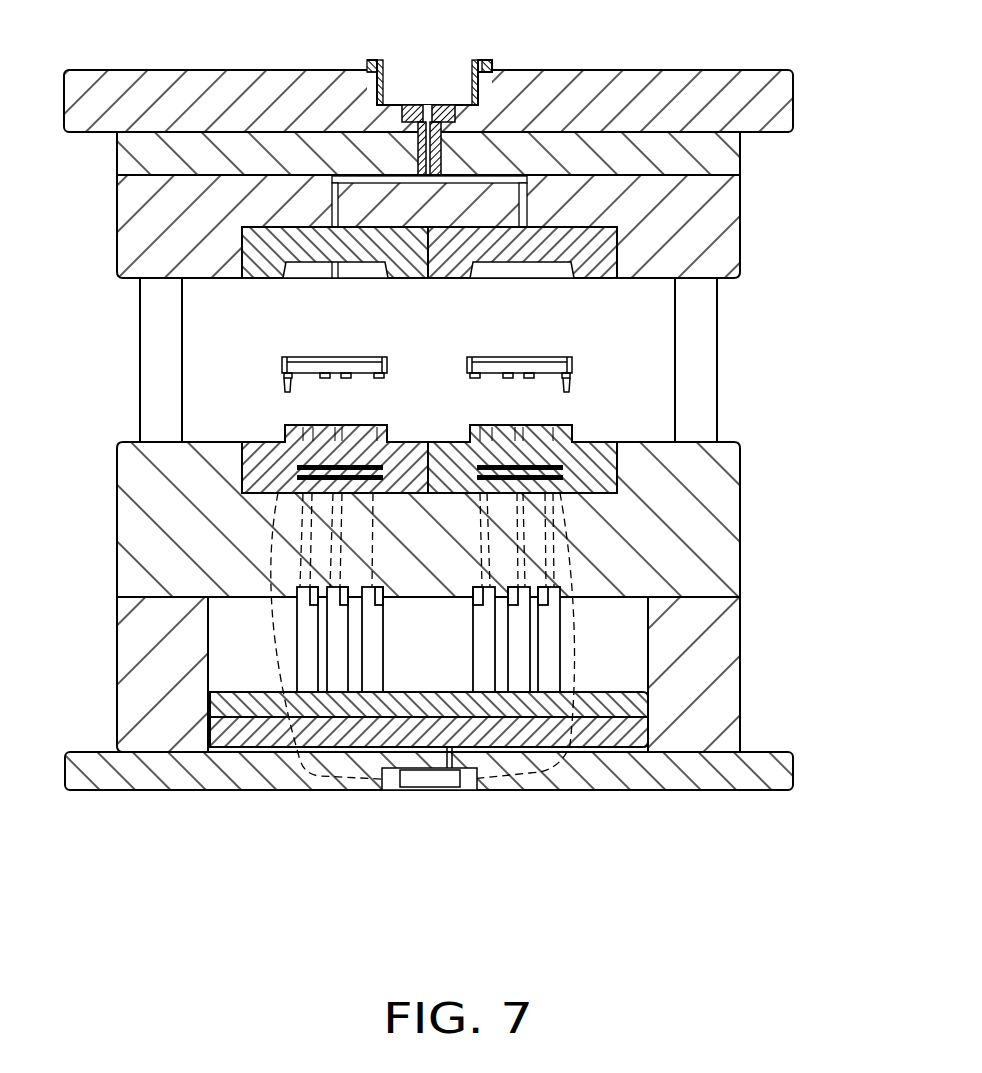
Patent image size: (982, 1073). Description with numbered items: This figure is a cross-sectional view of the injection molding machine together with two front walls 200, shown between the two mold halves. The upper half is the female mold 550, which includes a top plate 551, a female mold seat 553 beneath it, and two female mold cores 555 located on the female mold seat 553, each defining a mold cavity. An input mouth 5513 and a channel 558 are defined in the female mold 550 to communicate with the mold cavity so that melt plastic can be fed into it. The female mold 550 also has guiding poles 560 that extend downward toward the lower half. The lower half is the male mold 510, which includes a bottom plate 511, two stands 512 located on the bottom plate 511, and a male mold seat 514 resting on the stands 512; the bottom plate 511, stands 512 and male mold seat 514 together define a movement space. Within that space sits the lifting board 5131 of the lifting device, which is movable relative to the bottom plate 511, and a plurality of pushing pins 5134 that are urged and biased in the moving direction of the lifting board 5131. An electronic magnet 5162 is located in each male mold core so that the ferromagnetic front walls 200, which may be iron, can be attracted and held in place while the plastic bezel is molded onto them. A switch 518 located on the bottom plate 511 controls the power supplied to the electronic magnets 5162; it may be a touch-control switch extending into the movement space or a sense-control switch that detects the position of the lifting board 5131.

The female mold 550 is at (466, 169).
The top plate 551 is at (773, 85).
The input mouth 5513 is at (452, 72).
The channel 558 is at (412, 108).
The female mold seat 553 is at (489, 253).
The female mold core 555 is at (603, 258).
The guiding pole 560 is at (155, 350).
The front wall 200 is at (572, 369).
The male mold 510 is at (470, 620).
The male mold seat 514 is at (698, 465).
The electronic magnet 5162 is at (575, 440).
The pushing pin 5134 is at (548, 538).
The stand 512 is at (698, 667).
The lifting board 5131 is at (630, 727).
The bottom plate 511 is at (698, 773).
The switch 518 is at (450, 762).